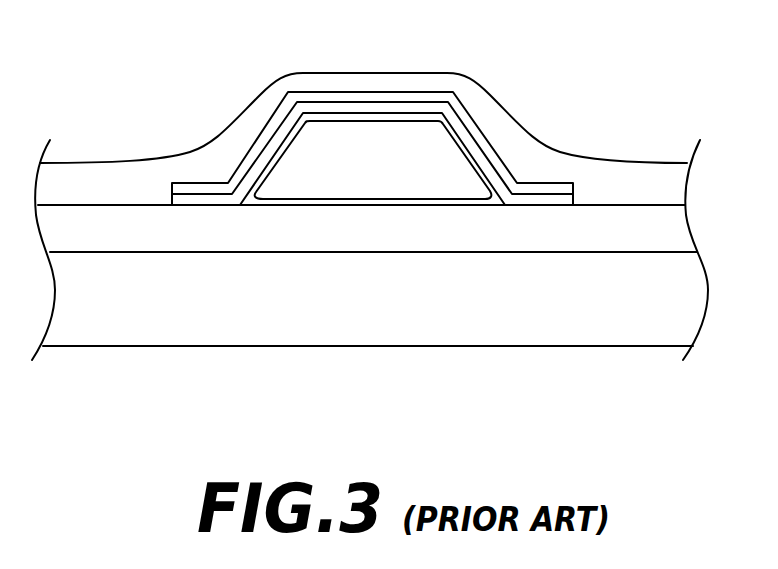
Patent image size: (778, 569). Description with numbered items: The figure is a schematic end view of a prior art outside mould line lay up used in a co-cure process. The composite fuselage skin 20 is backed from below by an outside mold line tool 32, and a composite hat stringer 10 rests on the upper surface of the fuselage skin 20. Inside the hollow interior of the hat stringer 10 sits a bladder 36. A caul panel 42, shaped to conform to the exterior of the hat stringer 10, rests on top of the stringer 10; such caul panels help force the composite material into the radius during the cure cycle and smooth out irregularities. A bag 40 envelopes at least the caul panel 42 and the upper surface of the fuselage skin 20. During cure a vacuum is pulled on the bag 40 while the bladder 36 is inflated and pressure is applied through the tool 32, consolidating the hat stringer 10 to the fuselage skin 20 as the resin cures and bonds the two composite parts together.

The hat stringer 10 is at (410, 110).
The fuselage skin 20 is at (617, 225).
The outside mold line tool 32 is at (525, 322).
The bladder 36 is at (350, 138).
The bag 40 is at (527, 147).
The caul panel 42 is at (467, 115).